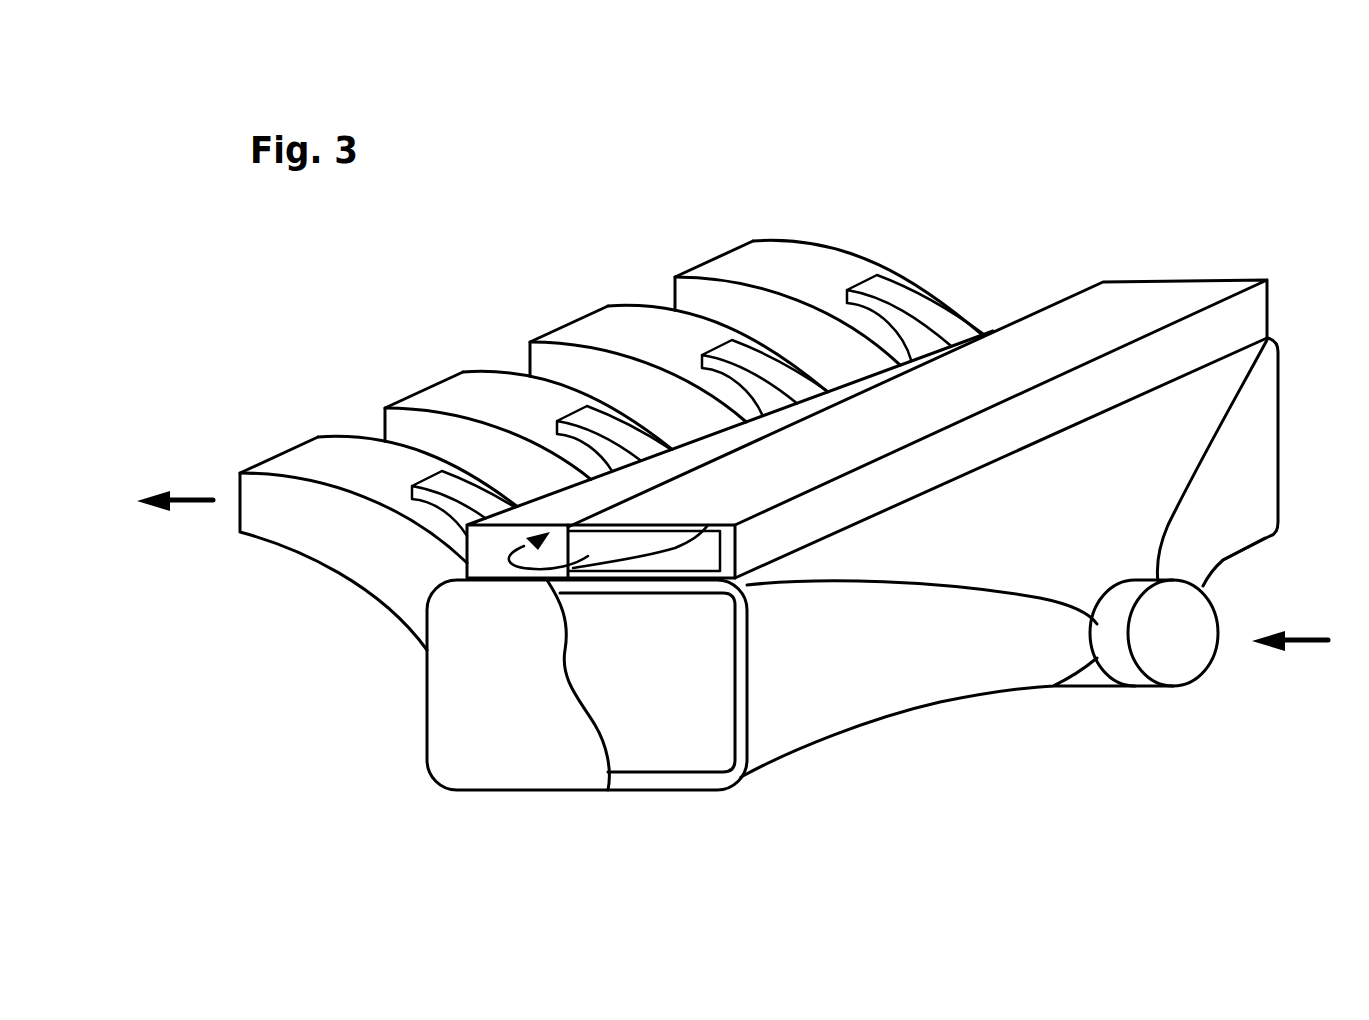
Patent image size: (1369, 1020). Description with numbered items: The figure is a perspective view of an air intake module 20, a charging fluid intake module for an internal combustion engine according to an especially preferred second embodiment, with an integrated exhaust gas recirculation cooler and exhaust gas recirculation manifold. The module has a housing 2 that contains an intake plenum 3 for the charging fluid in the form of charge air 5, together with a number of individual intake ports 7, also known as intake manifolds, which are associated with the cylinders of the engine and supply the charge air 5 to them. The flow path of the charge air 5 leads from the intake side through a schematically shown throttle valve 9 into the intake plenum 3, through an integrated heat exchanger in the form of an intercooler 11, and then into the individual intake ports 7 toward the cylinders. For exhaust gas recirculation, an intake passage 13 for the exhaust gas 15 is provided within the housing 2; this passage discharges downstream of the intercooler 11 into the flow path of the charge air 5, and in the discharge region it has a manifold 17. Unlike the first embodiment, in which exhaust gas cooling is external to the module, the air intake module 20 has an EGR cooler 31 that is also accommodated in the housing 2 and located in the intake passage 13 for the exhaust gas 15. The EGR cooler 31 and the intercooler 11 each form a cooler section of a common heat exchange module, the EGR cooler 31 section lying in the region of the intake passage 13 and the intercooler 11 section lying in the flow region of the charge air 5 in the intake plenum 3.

The housing 2 is at (1018, 352).
The intake plenum 3 is at (1069, 516).
The charge air 5 is at (192, 500).
The intake ports 7 is at (342, 478).
The throttle valve 9 is at (1178, 652).
The intercooler 11 is at (660, 752).
The intake passage 13 is at (1140, 290).
The exhaust gas 15 is at (1267, 251).
The manifold 17 is at (455, 488).
The air intake module 20 is at (1010, 163).
The EGR cooler 31 is at (700, 523).